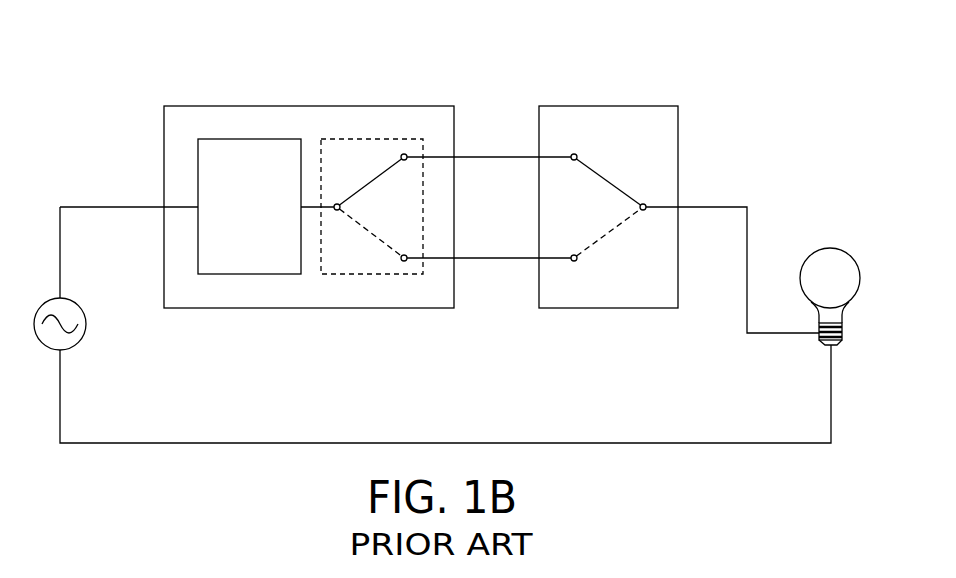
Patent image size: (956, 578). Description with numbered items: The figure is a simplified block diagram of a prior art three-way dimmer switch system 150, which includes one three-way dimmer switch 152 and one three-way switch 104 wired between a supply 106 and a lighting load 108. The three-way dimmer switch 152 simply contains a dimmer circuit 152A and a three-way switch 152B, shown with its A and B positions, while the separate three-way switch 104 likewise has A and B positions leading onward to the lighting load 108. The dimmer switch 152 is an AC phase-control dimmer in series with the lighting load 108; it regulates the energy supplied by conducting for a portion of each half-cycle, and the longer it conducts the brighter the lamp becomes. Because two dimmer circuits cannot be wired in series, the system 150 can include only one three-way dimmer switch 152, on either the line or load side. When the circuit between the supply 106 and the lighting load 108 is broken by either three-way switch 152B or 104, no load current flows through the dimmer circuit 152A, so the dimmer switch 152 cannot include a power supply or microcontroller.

The three-way dimmer switch system 150 is at (422, 70).
The three-way dimmer switch 152 is at (318, 105).
The dimmer circuit 152A is at (267, 274).
The three-way switch 152B is at (390, 274).
The three-way switch 104 is at (593, 105).
The supply 106 is at (77, 343).
The lighting load 108 is at (838, 250).